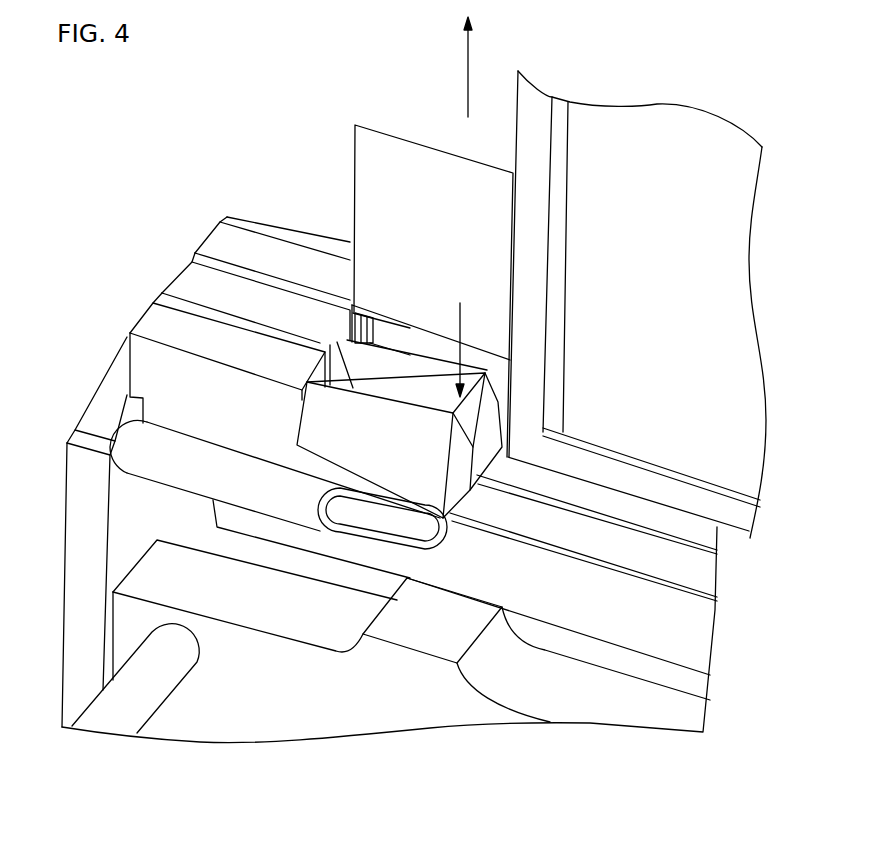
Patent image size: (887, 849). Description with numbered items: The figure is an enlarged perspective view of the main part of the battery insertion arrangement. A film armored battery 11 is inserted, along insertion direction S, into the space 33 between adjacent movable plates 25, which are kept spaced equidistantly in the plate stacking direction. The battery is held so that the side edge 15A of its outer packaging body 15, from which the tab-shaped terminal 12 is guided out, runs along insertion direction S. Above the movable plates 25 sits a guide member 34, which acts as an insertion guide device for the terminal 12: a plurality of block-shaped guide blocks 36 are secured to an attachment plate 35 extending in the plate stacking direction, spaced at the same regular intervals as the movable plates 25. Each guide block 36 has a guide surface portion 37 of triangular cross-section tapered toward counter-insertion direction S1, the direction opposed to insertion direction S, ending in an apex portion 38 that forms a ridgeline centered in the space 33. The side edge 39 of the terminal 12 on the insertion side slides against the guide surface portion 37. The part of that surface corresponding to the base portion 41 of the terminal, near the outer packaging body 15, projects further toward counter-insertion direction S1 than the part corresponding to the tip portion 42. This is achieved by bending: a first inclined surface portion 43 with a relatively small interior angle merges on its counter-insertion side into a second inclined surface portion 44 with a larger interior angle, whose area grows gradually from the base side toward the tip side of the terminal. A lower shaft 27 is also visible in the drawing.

The film armored battery 11 is at (657, 103).
The terminal 12 is at (405, 157).
The outer packaging body 15 is at (723, 305).
The side edge 15A is at (517, 117).
The movable plate 25 is at (700, 543).
The shaft 27 is at (150, 695).
The space 33 is at (657, 565).
The guide member 34 is at (138, 280).
The attachment plate 35 is at (78, 528).
The guide block 36 is at (158, 290).
The guide surface portion 37 is at (353, 347).
The apex portion 38 is at (390, 443).
The side edge 39 is at (350, 388).
The base portion 41 is at (500, 345).
The tip portion 42 is at (360, 310).
The first inclined surface portion 43 is at (433, 440).
The second inclined surface portion 44 is at (323, 422).
The insertion direction S is at (458, 333).
The counter-insertion direction S1 is at (468, 76).